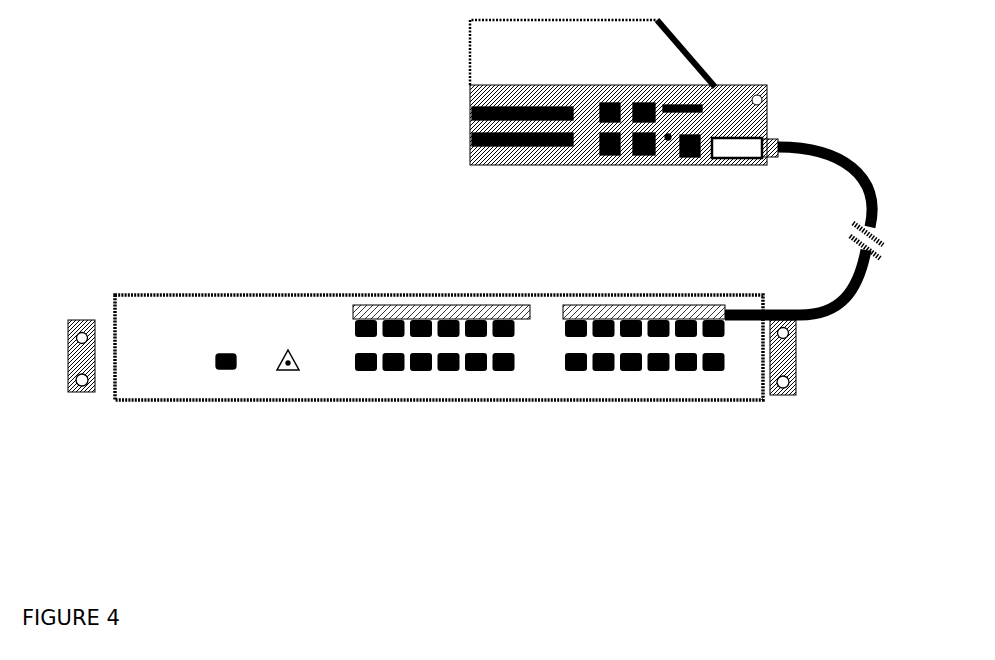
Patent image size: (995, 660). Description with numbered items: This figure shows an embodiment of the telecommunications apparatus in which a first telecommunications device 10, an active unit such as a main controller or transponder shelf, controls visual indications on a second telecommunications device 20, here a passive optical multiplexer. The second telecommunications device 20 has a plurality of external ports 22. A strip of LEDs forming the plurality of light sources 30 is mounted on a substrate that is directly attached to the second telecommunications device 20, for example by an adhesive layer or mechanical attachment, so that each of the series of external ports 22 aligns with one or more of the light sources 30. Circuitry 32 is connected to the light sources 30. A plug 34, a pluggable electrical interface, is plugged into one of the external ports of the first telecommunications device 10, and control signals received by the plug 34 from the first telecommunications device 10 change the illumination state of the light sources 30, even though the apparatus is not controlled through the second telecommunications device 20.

The first telecommunications device 10 is at (472, 97).
The second telecommunications device 20 is at (432, 341).
The external ports 22 is at (612, 365).
The light sources 30 is at (548, 306).
The circuitry 32 is at (672, 305).
The plug 34 is at (770, 146).